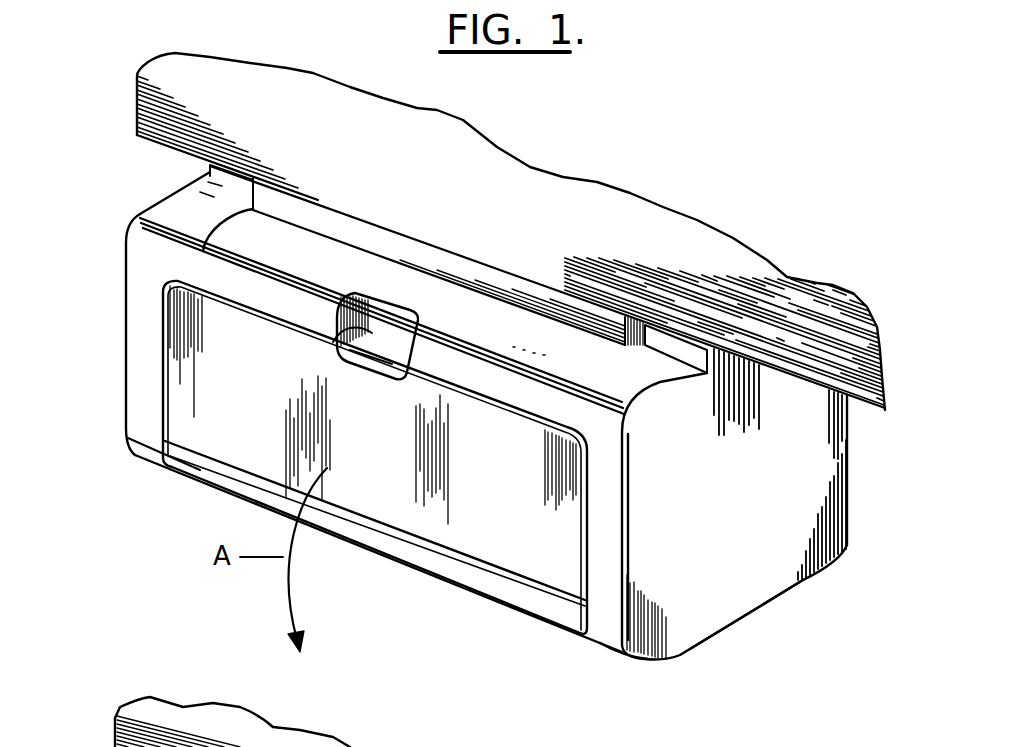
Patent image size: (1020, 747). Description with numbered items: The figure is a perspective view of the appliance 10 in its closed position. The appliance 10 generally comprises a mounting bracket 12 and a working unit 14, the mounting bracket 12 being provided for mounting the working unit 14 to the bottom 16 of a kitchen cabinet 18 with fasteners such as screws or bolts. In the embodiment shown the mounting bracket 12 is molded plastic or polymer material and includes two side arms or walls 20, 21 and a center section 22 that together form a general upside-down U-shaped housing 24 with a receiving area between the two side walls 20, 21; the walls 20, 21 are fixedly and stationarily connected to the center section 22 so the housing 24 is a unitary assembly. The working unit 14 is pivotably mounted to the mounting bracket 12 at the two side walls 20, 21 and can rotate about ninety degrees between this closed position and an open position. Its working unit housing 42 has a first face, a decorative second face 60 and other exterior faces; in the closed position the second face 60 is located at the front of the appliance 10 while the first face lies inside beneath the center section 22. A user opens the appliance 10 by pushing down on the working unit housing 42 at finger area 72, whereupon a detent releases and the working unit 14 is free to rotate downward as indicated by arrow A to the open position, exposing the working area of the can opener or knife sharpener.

The appliance 10 is at (746, 629).
The mounting bracket 12 is at (140, 448).
The working unit 14 is at (430, 563).
The bottom 16 is at (818, 385).
The kitchen cabinet 18 is at (708, 247).
The side wall 20 is at (125, 330).
The side wall 21 is at (777, 568).
The center section 22 is at (310, 247).
The housing 24 is at (669, 630).
The working unit housing 42 is at (537, 600).
The second face 60 is at (246, 368).
The finger area 72 is at (392, 368).